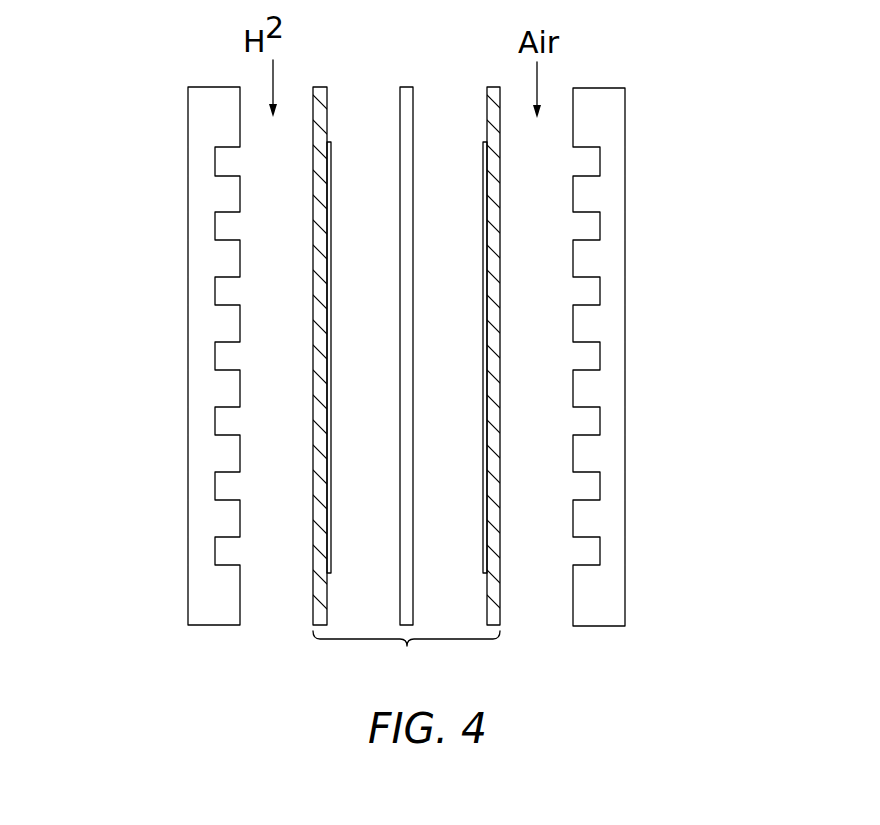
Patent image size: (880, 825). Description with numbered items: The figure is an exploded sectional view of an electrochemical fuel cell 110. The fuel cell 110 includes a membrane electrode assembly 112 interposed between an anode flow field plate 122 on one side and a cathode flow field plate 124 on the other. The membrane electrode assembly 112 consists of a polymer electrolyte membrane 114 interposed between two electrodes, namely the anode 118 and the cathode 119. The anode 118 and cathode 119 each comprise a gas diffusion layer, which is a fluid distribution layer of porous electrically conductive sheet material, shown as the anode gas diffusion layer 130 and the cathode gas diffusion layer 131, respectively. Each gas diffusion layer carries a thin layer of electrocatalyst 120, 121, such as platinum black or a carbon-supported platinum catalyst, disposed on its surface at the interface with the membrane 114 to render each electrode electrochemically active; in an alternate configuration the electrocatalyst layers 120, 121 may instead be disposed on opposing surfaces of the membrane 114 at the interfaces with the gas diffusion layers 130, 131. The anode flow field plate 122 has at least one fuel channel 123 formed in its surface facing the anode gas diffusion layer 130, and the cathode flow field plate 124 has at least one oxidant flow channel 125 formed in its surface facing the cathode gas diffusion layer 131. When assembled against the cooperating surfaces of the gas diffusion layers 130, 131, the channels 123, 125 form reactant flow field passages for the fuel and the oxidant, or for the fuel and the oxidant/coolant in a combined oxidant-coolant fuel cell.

The fuel cell 110 is at (606, 80).
The membrane electrode assembly 112 is at (407, 646).
The polymer electrolyte membrane 114 is at (400, 628).
The anode 118 is at (303, 632).
The cathode 119 is at (512, 631).
The electrocatalyst layer 120 is at (331, 192).
The electrocatalyst layer 121 is at (483, 172).
The anode flow field plate 122 is at (200, 612).
The fuel channel 123 is at (223, 483).
The cathode flow field plate 124 is at (603, 612).
The oxidant flow channel 125 is at (590, 549).
The anode gas diffusion layer 130 is at (313, 188).
The cathode gas diffusion layer 131 is at (500, 158).